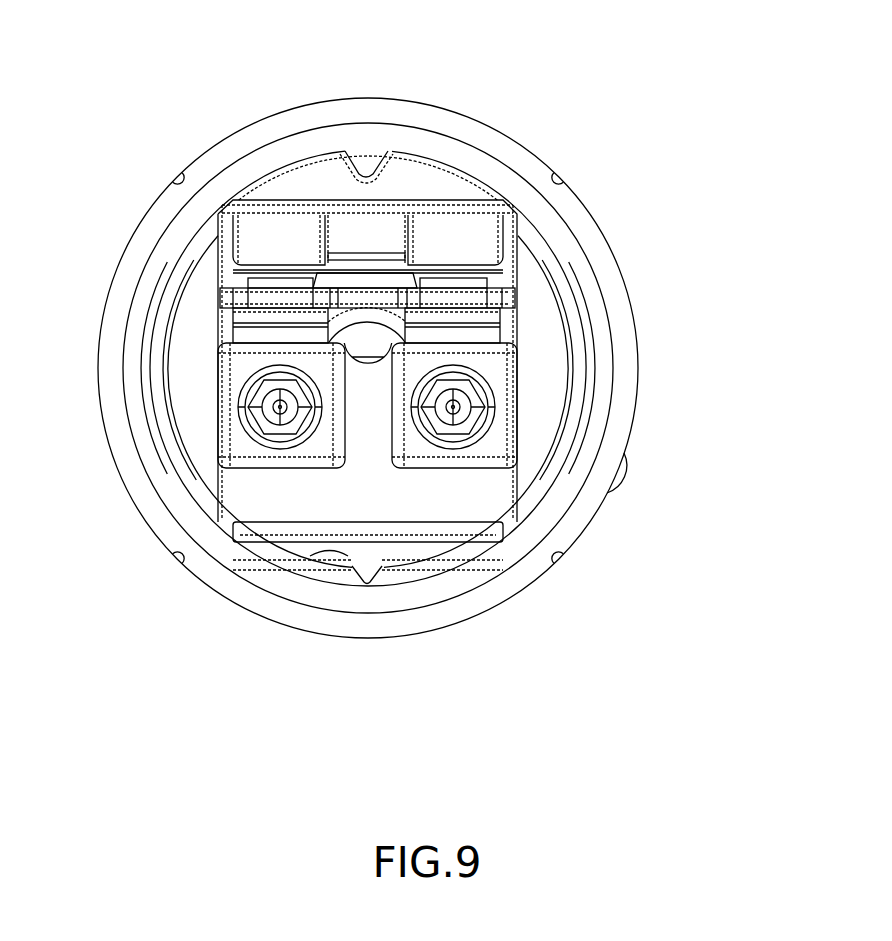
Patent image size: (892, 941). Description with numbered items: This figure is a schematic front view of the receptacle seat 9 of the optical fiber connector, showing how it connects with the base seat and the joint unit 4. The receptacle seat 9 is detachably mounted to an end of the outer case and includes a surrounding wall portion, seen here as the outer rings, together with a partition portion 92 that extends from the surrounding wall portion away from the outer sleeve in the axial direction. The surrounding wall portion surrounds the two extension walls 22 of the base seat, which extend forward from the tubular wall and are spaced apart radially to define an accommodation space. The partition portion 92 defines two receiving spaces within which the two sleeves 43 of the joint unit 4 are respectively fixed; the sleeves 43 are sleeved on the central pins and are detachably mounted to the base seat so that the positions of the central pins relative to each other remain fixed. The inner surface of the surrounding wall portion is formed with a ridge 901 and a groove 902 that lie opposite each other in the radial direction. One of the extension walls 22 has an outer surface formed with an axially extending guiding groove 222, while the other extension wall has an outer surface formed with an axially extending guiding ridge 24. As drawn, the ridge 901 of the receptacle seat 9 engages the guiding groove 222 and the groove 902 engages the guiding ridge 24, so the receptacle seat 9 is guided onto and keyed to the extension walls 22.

The receptacle seat 9 is at (545, 146).
The ridge 901 is at (332, 168).
The extension walls 22 is at (421, 168).
The guiding groove 222 is at (362, 170).
The guiding ridge 24 is at (368, 578).
The groove 902 is at (360, 558).
The joint unit 4 is at (372, 395).
The partition portion 92 is at (500, 503).
The sleeves 43 is at (513, 420).